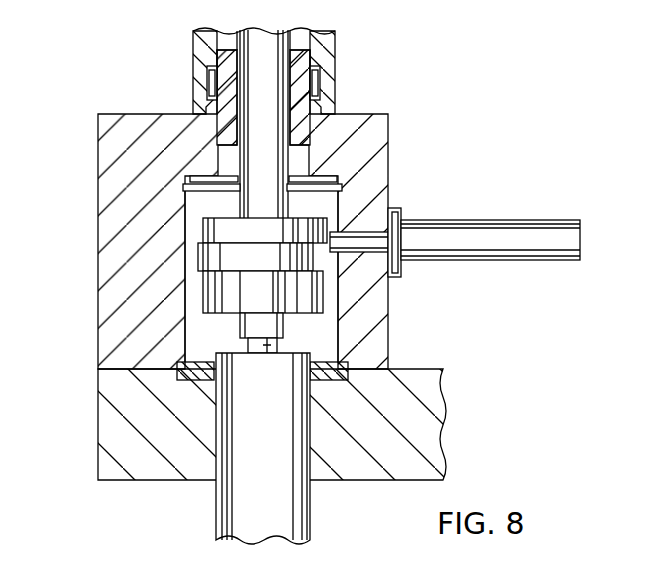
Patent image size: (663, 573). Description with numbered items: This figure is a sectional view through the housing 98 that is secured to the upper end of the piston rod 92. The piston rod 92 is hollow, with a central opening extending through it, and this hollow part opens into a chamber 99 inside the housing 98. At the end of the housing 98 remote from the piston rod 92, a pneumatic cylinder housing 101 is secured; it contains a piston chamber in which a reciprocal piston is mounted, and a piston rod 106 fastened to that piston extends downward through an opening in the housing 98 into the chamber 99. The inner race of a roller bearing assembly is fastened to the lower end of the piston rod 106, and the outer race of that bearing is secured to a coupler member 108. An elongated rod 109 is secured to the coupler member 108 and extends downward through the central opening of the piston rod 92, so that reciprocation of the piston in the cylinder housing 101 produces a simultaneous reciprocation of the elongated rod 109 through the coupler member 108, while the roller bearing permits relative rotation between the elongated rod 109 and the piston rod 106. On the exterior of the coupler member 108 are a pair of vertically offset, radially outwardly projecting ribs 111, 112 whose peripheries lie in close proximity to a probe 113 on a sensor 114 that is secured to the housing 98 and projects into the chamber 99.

The piston rod 92 is at (293, 520).
The housing 98 is at (94, 239).
The chamber 99 is at (336, 341).
The pneumatic cylinder housing 101 is at (340, 52).
The piston rod 106 is at (265, 97).
The coupler member 108 is at (330, 297).
The elongated rod 109 is at (268, 346).
The rib 111 is at (233, 230).
The rib 112 is at (243, 262).
The probe 113 is at (367, 232).
The sensor 114 is at (477, 237).